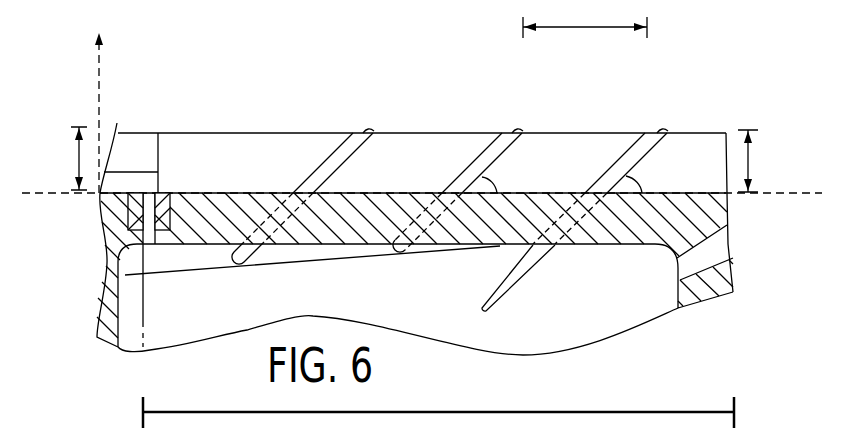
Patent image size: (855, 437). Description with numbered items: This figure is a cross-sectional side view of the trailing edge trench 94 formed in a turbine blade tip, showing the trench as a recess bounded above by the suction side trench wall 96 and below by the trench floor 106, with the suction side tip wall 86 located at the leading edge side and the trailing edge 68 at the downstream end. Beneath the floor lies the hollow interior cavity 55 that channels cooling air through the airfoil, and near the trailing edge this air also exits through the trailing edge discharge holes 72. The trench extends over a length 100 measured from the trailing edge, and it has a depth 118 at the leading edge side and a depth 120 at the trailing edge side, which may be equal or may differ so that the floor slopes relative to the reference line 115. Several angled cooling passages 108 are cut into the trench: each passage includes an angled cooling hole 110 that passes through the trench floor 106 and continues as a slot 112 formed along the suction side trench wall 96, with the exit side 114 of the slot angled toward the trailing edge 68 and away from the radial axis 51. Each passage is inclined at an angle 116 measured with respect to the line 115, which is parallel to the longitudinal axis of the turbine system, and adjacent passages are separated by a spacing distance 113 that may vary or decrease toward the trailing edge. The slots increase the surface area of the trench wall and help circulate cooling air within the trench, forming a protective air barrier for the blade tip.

The radial axis 51 is at (98, 98).
The interior cavity 55 is at (428, 303).
The trailing edge 68 is at (738, 218).
The trailing edge discharge holes 72 is at (730, 243).
The suction side tip wall 86 is at (238, 132).
The trailing edge trench 94 is at (247, 169).
The suction side trench wall 96 is at (287, 153).
The length of the trailing edge trench 100 is at (625, 410).
The trench floor 106 is at (205, 193).
The angled cooling passages 108 is at (373, 110).
The angled cooling hole 110 is at (283, 225).
The slot 112 is at (358, 155).
The spacing distance 113 is at (597, 28).
The exit side of the slot 114 is at (370, 130).
The reference line 115 is at (50, 197).
The angle 116 is at (497, 183).
The trench depth at leading edge side 118 is at (78, 157).
The trench depth at trailing edge side 120 is at (753, 157).